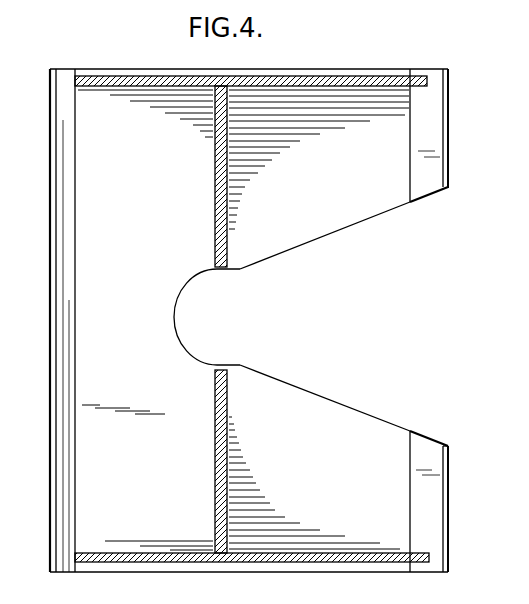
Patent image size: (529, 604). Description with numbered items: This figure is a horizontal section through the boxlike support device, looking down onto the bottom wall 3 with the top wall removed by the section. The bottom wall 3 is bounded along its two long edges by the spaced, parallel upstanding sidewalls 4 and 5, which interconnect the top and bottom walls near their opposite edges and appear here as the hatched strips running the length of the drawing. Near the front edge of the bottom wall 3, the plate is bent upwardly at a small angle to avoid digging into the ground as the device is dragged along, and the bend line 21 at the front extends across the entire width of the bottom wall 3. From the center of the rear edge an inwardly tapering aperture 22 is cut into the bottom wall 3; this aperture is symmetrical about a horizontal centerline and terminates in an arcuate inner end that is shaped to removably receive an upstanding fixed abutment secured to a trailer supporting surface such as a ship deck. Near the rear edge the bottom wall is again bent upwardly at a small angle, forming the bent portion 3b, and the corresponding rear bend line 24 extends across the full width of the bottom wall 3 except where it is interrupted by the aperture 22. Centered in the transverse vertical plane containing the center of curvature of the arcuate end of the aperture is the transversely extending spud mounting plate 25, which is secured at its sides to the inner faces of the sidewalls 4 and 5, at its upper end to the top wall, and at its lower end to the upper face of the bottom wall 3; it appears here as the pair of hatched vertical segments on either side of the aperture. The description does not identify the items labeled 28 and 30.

The bottom wall 3 is at (326, 467).
The upwardly bent rear portion of bottom wall 3b is at (438, 120).
The sidewall 4 is at (332, 564).
The sidewall 5 is at (302, 78).
The front bend line 21 is at (76, 288).
The inwardly tapering aperture 22 is at (322, 394).
The rear bend line 24 is at (406, 136).
The spud mounting plate 25 is at (215, 172).
The rounded cutout 28 is at (178, 306).
The left bar 30 is at (64, 410).